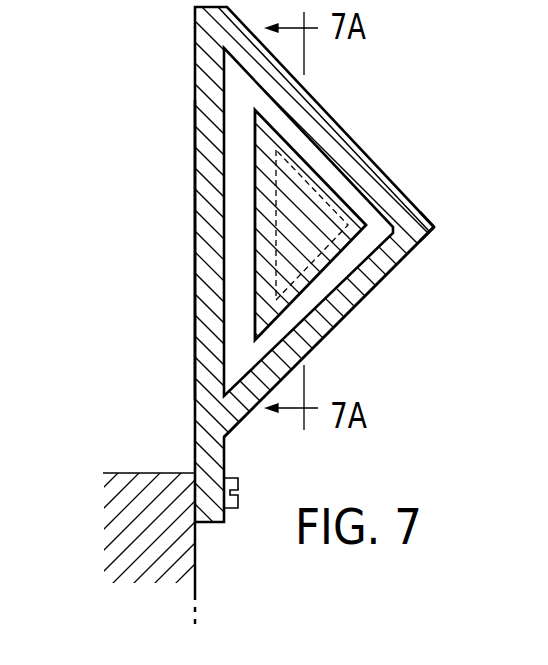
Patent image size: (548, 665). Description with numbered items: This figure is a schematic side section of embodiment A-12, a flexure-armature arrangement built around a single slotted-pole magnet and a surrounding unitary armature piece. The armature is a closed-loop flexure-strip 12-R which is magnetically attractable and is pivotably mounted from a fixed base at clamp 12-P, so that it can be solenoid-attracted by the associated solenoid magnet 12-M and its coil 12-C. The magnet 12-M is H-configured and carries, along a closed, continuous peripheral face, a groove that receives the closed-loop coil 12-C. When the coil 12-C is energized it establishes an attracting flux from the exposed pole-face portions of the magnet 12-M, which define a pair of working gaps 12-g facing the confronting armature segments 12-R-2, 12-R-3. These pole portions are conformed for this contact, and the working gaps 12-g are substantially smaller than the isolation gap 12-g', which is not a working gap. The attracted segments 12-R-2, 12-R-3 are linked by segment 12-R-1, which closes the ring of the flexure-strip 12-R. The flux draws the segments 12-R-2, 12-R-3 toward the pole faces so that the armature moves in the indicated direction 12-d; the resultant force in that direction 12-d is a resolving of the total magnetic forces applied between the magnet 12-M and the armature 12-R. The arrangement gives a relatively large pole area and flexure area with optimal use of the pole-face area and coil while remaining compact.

The closed-loop flexure-strip 12-R is at (195, 117).
The linking segment 12-R-1 is at (204, 373).
The armature segment 12-R-2 is at (328, 115).
The armature segment 12-R-3 is at (380, 270).
The embodiment A-12 is at (440, 228).
The direction of actuation 12-d is at (345, 339).
The clamp 12-P is at (240, 478).
The closed-loop coil 12-C is at (253, 197).
The solenoid magnet 12-M is at (328, 237).
The working gaps 12-g is at (348, 222).
The isolation gap 12-g' is at (185, 294).